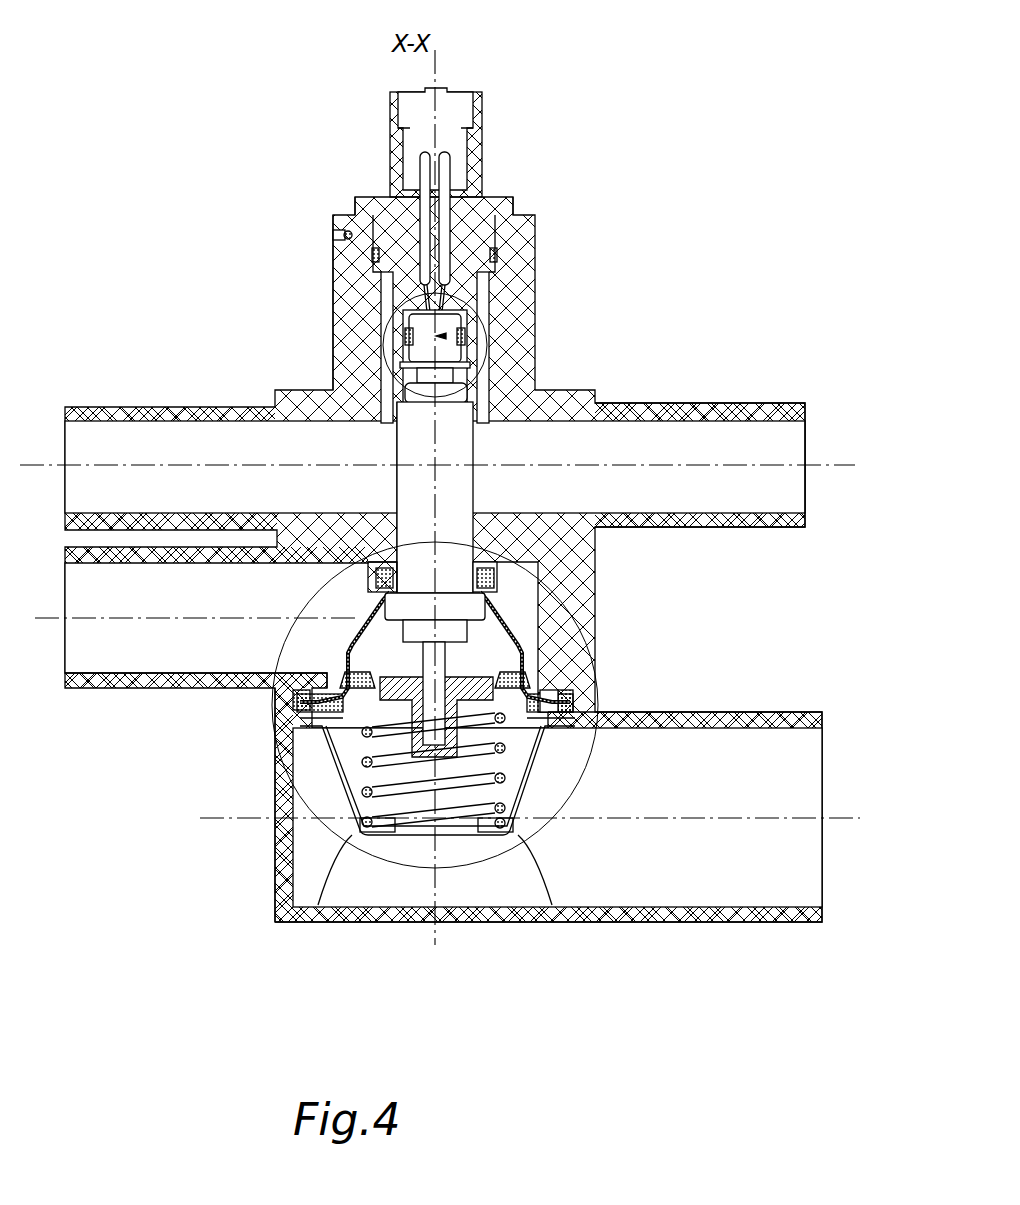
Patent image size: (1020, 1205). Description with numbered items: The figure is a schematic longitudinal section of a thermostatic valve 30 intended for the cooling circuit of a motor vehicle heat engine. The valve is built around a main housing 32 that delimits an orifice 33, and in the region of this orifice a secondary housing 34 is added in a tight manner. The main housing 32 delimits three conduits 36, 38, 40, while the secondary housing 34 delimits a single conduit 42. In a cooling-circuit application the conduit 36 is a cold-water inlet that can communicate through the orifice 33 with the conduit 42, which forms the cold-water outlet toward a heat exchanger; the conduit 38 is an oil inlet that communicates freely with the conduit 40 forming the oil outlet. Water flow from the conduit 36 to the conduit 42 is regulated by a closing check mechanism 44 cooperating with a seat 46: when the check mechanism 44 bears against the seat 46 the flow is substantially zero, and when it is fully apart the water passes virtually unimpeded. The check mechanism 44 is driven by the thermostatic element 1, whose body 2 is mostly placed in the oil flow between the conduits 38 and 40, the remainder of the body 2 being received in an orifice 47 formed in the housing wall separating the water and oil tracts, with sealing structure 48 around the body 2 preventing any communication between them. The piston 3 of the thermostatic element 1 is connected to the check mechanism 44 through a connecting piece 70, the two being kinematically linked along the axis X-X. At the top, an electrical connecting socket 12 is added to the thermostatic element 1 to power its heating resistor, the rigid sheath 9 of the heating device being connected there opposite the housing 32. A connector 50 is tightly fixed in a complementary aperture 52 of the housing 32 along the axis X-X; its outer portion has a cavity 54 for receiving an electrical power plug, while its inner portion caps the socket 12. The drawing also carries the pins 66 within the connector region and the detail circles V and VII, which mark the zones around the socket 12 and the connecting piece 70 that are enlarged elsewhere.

The thermostatic valve 30 is at (440, 497).
The cavity 54 is at (452, 108).
The connector 50 is at (462, 200).
The complementary aperture 52 is at (478, 245).
The connector pins 66 is at (423, 182).
The rigid sheath 9 is at (333, 350).
The electrical connecting socket 12 is at (463, 340).
The thermostatic element 1 is at (480, 457).
The orifice 47 is at (412, 540).
The sealing structure 48 is at (385, 565).
The body 2 is at (470, 492).
The main housing 32 is at (593, 588).
The secondary housing 34 is at (772, 712).
The connecting piece 70 is at (416, 680).
The piston 3 is at (443, 703).
The seat 46 is at (285, 682).
The closing check mechanism 44 is at (300, 775).
The orifice 33 is at (538, 760).
The conduit 38 is at (435, 468).
The conduit 40 is at (700, 465).
The conduit 36 is at (306, 637).
The conduit 42 is at (557, 817).
The detail circle V is at (488, 315).
The detail circle VII is at (600, 675).